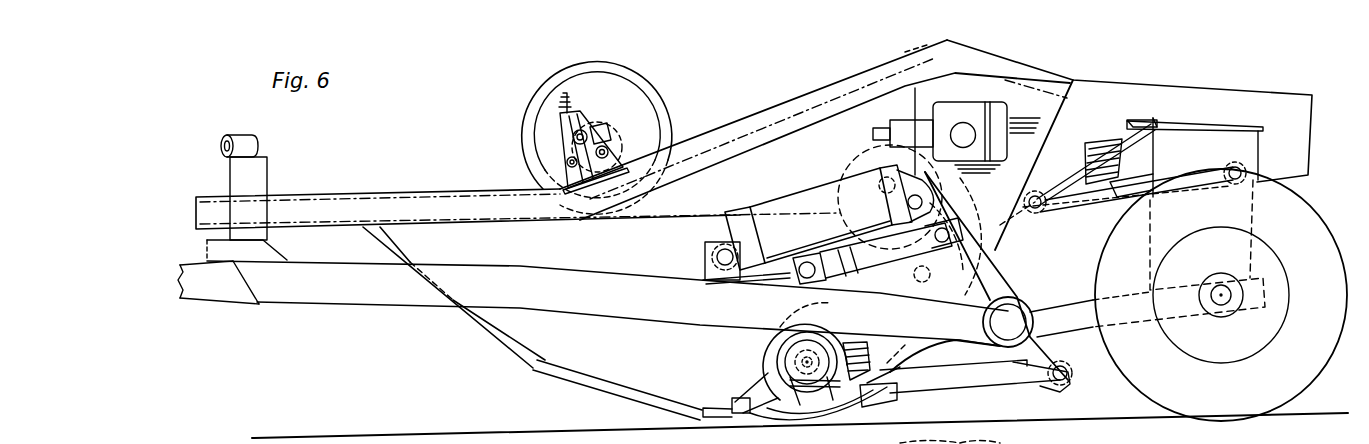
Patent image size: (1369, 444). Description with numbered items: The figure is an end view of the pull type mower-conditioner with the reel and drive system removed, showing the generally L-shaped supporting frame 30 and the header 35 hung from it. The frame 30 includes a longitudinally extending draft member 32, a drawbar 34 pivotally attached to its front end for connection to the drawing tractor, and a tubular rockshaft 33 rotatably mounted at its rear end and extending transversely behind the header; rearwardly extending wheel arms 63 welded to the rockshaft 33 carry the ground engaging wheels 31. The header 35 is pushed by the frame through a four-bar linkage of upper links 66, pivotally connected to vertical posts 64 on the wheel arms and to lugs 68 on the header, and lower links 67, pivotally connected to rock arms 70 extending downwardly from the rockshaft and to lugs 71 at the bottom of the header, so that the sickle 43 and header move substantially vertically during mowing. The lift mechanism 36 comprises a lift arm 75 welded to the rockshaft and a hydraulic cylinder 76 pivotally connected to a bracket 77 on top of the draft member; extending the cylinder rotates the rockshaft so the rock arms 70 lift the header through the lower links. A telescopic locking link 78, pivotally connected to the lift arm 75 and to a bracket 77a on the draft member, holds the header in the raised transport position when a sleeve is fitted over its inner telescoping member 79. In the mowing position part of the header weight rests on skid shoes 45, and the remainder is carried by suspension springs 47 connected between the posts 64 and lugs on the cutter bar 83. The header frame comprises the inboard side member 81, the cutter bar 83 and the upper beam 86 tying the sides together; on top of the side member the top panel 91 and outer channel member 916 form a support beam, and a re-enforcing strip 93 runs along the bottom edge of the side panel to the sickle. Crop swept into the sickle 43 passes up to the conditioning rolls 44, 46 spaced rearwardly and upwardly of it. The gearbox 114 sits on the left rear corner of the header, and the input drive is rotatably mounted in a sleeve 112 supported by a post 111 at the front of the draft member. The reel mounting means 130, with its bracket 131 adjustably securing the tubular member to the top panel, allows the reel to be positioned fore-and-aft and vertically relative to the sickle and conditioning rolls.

The supporting frame 30 is at (1037, 289).
The ground engaging wheels 31 is at (1148, 392).
The draft member 32 is at (418, 298).
The rockshaft 33 is at (1008, 322).
The drawbar 34 is at (232, 298).
The header 35 is at (823, 81).
The lift mechanism 36 is at (843, 175).
The sickle 43 is at (735, 400).
The conditioning roll 44 is at (800, 430).
The skid shoes 45 is at (888, 400).
The conditioning roll 46 is at (880, 303).
The suspension springs 47 is at (1100, 118).
The wheel arms 63 is at (1072, 305).
The posts 64 is at (1190, 120).
The upper links 66 is at (1137, 178).
The lower links 67 is at (975, 385).
The lugs 68 is at (1040, 190).
The rock arms 70 is at (1062, 356).
The lugs 71 is at (868, 420).
The lift arm 75 is at (945, 200).
The hydraulic cylinder 76 is at (780, 206).
The bracket 77 is at (705, 253).
The bracket 77a is at (773, 278).
The telescopic locking link 78 is at (865, 270).
The inner telescoping member 79 is at (828, 284).
The side member 81 is at (500, 334).
The cutter bar 83 is at (770, 425).
The upper beam 86 is at (900, 46).
The top panel 91 is at (483, 185).
The outer channel member 916 is at (318, 196).
The re-enforcing strip 93 is at (555, 363).
The post 111 is at (268, 170).
The sleeve 112 is at (262, 133).
The gearbox 114 is at (985, 103).
The mounting means 130 is at (640, 114).
The bracket 131 is at (553, 102).